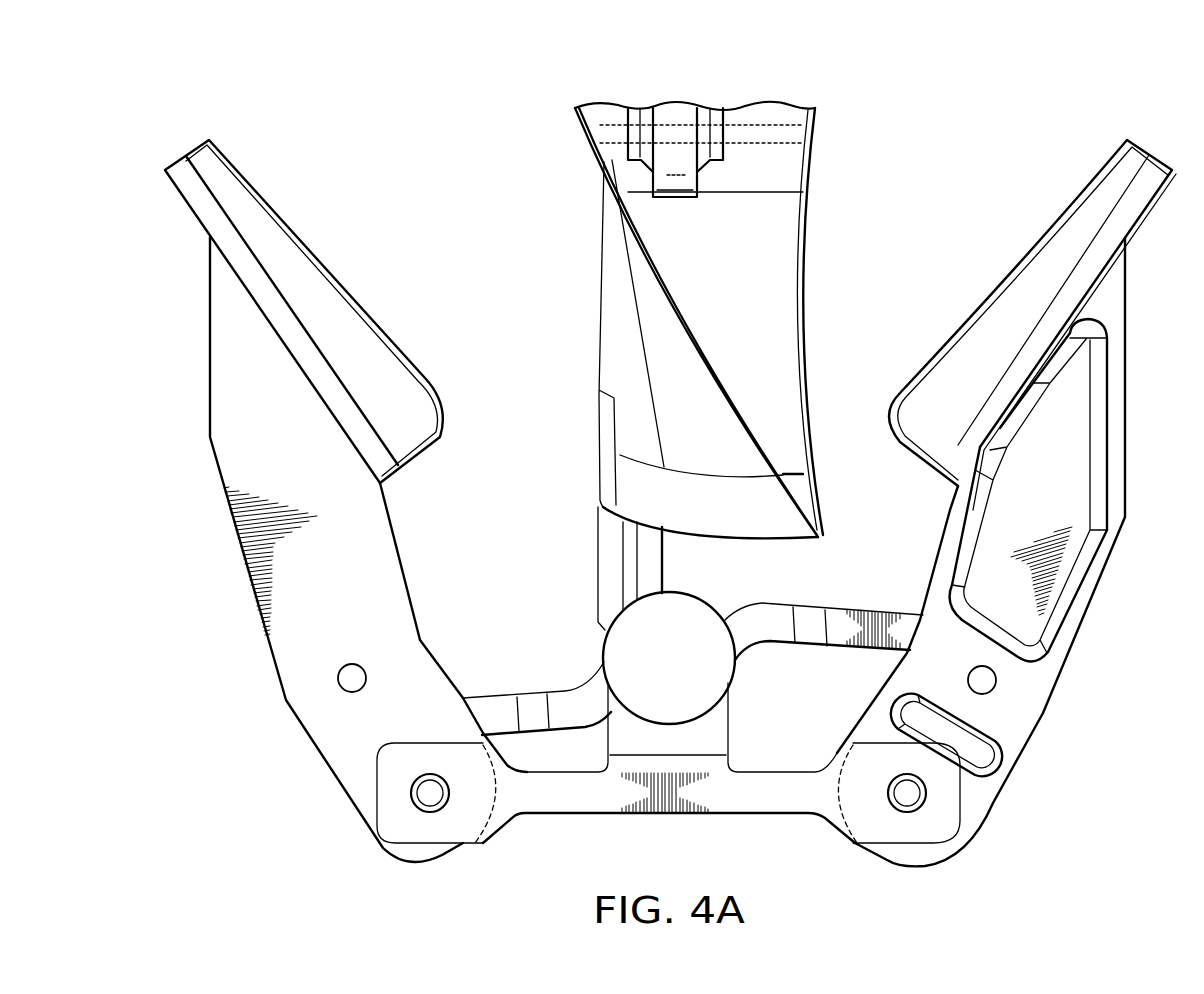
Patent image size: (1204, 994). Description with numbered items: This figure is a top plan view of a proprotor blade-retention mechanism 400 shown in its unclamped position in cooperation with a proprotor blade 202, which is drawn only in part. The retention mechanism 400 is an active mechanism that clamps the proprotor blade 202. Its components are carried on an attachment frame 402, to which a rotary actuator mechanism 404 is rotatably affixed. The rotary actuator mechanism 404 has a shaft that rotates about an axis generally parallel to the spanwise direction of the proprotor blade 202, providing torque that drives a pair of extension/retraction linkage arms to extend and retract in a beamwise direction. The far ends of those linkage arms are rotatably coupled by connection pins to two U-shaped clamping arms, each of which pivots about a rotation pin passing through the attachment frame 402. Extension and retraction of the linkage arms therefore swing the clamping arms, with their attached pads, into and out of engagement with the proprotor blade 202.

The proprotor blade-retention mechanism 400 is at (323, 80).
The proprotor blade 202 is at (807, 218).
The attachment frame 402 is at (577, 813).
The rotary actuator mechanism 404 is at (713, 672).